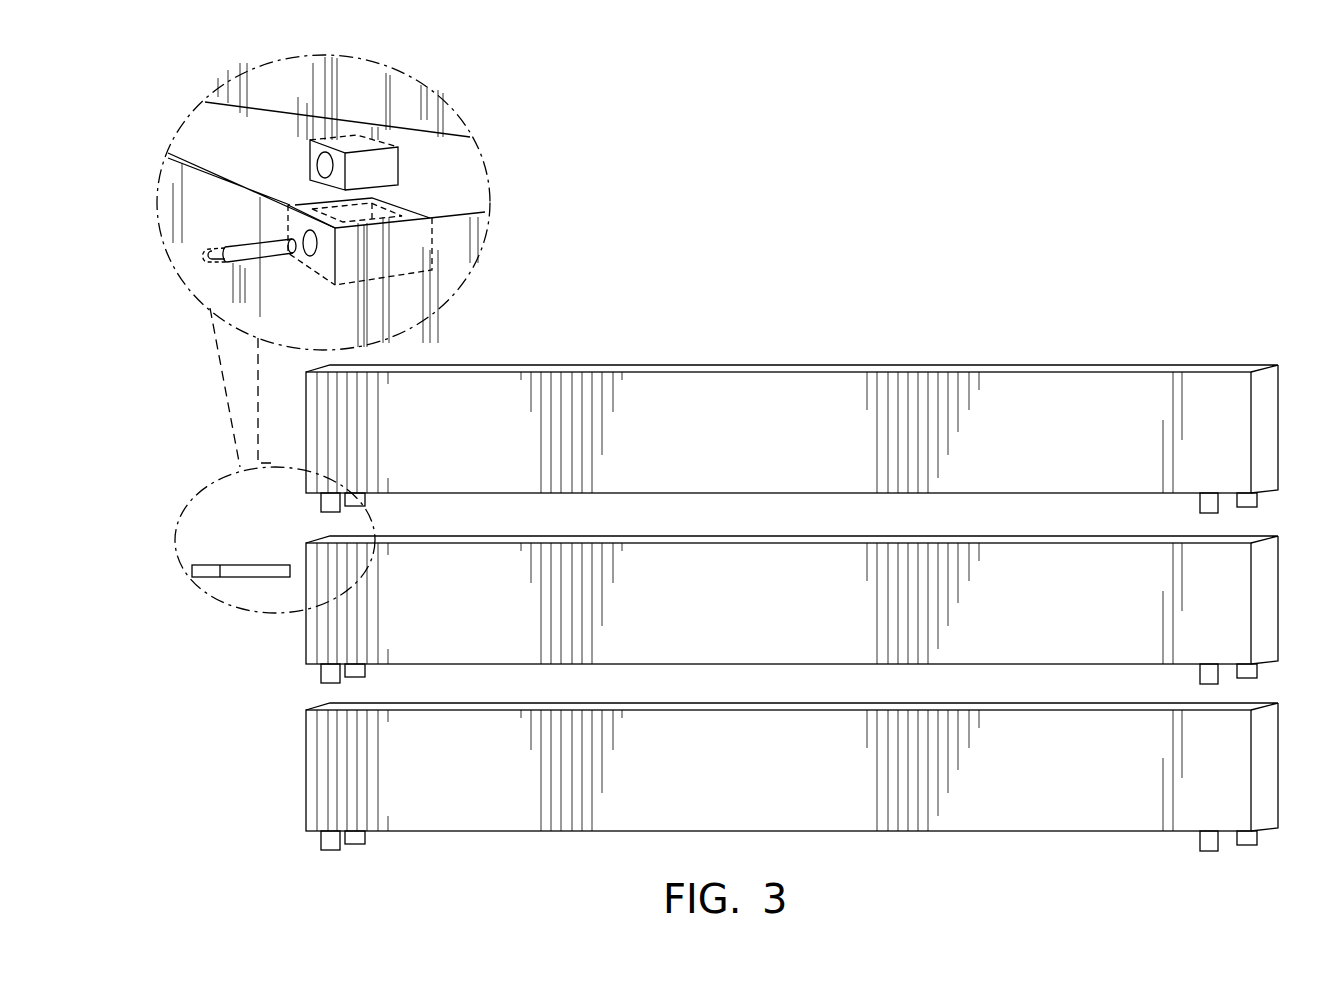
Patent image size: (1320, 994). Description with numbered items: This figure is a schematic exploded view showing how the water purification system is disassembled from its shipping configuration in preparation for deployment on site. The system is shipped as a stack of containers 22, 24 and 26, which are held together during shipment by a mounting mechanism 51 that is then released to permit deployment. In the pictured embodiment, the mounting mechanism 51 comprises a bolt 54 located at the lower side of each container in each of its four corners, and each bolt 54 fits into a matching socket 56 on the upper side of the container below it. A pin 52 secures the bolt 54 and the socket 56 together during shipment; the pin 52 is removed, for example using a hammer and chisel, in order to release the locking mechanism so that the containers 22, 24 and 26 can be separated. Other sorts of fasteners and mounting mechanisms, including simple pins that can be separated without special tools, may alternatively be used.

The container 22 is at (327, 409).
The container 24 is at (761, 600).
The container 26 is at (764, 767).
The mounting mechanism 51 is at (400, 65).
The pin 52 is at (250, 248).
The bolt 54 is at (387, 168).
The socket 56 is at (417, 255).